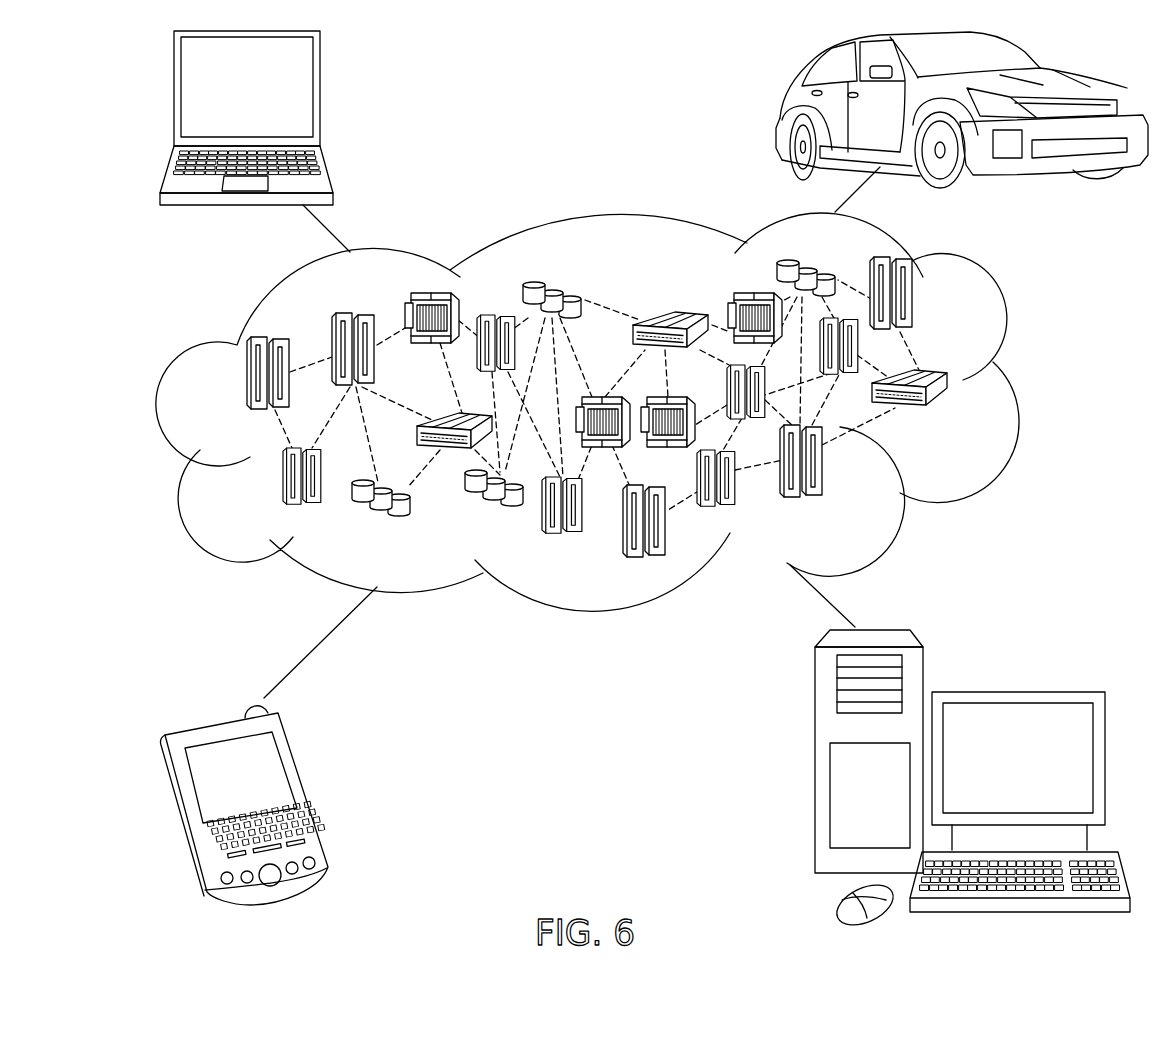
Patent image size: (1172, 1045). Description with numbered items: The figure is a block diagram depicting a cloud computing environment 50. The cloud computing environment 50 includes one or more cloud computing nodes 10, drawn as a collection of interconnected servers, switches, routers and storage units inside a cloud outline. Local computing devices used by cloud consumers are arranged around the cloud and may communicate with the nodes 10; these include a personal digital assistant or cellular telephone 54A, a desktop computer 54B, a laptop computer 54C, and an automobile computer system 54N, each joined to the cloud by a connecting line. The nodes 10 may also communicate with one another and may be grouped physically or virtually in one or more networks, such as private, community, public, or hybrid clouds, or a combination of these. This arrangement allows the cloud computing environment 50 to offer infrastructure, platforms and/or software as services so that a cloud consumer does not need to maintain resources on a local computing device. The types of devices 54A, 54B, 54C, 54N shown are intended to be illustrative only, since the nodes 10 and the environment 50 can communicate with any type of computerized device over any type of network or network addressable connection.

The cloud computing nodes 10 is at (953, 417).
The cloud computing environment 50 is at (1013, 383).
The personal digital assistant or cellular telephone 54A is at (307, 790).
The desktop computer 54B is at (1016, 692).
The laptop computer 54C is at (319, 96).
The automobile computer system 54N is at (783, 110).